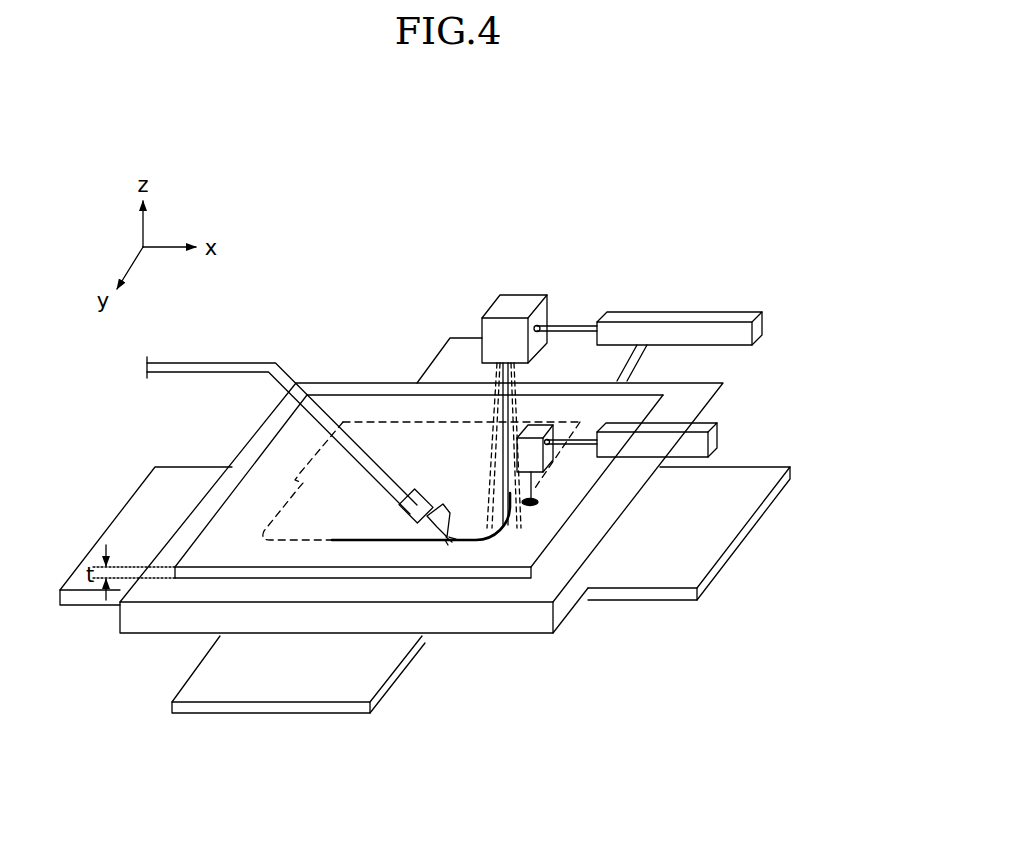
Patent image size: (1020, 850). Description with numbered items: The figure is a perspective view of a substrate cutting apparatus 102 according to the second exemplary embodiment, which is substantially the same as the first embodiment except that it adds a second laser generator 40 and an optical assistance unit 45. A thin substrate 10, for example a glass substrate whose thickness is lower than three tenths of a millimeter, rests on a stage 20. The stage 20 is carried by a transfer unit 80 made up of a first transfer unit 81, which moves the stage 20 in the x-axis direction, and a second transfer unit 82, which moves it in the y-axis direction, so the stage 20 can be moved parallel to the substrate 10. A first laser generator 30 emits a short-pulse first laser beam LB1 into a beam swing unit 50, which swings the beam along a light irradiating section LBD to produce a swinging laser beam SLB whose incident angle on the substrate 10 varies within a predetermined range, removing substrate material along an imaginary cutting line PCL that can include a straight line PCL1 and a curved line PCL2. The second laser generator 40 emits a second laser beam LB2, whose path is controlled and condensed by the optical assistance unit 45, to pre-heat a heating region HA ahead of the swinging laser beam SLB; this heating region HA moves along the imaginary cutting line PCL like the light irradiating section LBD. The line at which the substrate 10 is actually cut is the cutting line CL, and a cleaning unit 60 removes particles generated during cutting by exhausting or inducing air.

The substrate cutting apparatus 102 is at (393, 165).
The substrate 10 is at (573, 540).
The stage 20 is at (572, 622).
The first laser generator 30 is at (685, 305).
The second laser generator 40 is at (723, 433).
The optical assistance unit 45 is at (540, 424).
The beam swing unit 50 is at (523, 292).
The cleaning unit 60 is at (238, 362).
The transfer unit 80 is at (208, 779).
The first transfer unit 81 is at (93, 598).
The second transfer unit 82 is at (197, 705).
The first laser beam LB1 is at (567, 322).
The second laser beam LB2 is at (578, 430).
The swinging laser beam SLB is at (498, 412).
The imaginary cutting line PCL is at (537, 503).
The straight line PCL1 is at (375, 420).
The curved line PCL2 is at (253, 540).
The cutting line CL is at (428, 545).
The light irradiating section LBD is at (528, 522).
The heating region HA is at (540, 505).